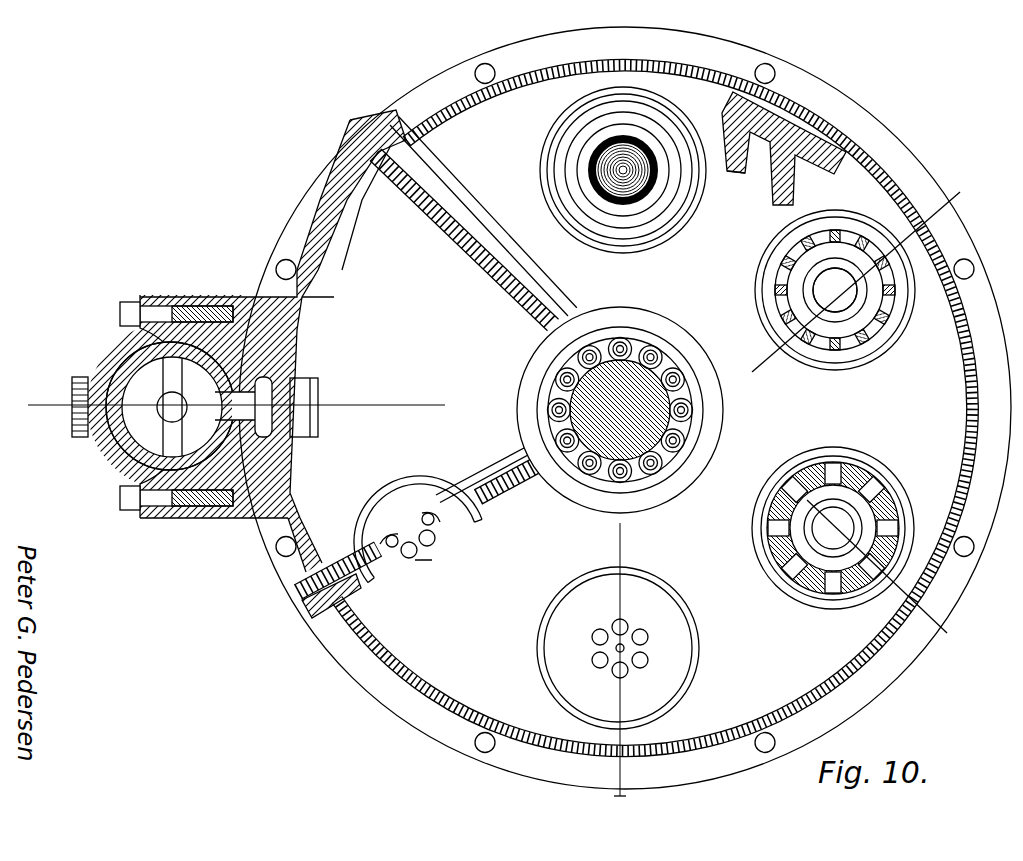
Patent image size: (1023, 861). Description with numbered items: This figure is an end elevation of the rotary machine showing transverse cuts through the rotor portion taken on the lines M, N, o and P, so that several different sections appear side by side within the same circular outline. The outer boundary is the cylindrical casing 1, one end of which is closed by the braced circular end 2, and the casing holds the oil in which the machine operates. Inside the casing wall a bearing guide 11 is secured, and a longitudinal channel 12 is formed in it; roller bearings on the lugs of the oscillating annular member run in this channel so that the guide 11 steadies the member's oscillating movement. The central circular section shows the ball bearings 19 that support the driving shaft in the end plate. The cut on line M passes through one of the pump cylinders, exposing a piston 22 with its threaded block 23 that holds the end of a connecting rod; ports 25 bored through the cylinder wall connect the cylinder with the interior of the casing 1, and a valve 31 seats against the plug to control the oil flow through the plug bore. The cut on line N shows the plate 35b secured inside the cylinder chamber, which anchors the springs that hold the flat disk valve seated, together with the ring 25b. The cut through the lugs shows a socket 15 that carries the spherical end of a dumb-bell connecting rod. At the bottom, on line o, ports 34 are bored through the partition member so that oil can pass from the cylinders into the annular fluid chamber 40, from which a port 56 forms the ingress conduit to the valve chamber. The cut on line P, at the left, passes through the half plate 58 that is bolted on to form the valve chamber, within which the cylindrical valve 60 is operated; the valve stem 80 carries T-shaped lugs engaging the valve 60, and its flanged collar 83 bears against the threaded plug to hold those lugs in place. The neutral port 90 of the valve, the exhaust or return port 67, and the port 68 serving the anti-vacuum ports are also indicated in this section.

The cylindrical casing 1 is at (870, 158).
The braced circular end 2 is at (860, 124).
The bearing guides 11 is at (770, 150).
The longitudinal channel 12 is at (784, 148).
The sockets 15 is at (623, 170).
The ball bearings 19 is at (681, 372).
The pistons 22 is at (590, 188).
The threaded block 23 is at (597, 170).
The ports 25 is at (880, 248).
The roller bearing ring 25b is at (903, 528).
The valve 31 is at (835, 290).
The ports 34 is at (655, 646).
The plate 35b is at (870, 280).
The annular fluid chamber 40 is at (358, 364).
The port 56 is at (304, 407).
The half plate 58 is at (118, 342).
The cylindrical valve 60 is at (128, 369).
The exhaust or return port 67 is at (243, 365).
The port 68 is at (206, 407).
The valve stem 80 is at (128, 457).
The flanged collar 83 is at (118, 443).
The neutral port 90 is at (128, 482).
The section line M is at (865, 277).
The section line N is at (884, 575).
The section line P is at (224, 407).
The section line O o is at (620, 803).